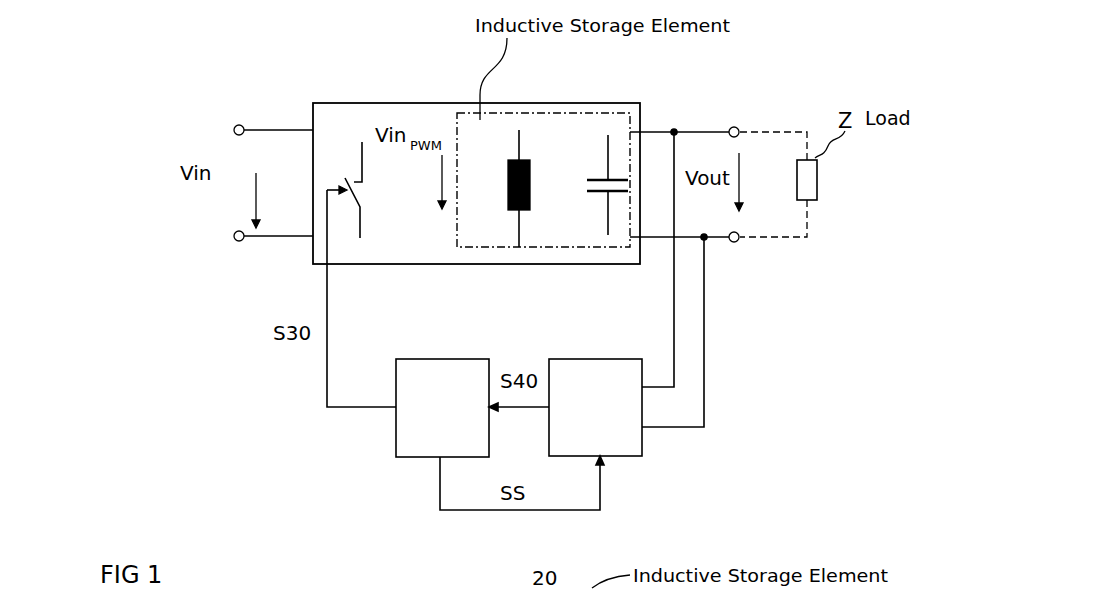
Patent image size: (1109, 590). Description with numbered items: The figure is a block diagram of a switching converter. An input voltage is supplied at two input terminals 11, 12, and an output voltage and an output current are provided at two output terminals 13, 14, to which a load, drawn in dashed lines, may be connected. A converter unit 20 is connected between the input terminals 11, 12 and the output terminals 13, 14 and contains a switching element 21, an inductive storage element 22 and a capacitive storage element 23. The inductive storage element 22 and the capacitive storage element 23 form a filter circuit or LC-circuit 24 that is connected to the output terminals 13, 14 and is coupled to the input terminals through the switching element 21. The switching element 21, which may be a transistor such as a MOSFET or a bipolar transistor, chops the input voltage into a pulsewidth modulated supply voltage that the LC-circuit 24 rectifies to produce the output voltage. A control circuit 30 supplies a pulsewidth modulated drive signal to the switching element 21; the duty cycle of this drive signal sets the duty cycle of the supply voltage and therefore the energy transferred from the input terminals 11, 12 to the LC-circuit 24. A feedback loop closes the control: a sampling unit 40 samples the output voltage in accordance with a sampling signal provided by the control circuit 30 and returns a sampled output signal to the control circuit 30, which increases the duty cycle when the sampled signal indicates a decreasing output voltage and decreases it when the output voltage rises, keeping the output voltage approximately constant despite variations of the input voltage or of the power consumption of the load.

The input terminal 11 is at (235, 126).
The input terminal 12 is at (235, 240).
The output terminal 13 is at (740, 126).
The output terminal 14 is at (741, 243).
The converter unit 20 is at (432, 102).
The switching element 21 is at (357, 173).
The inductive storage element 22 is at (503, 180).
The capacitive storage element 23 is at (605, 179).
The LC-circuit 24 is at (552, 107).
The control circuit 30 is at (440, 357).
The sampling unit 40 is at (600, 357).